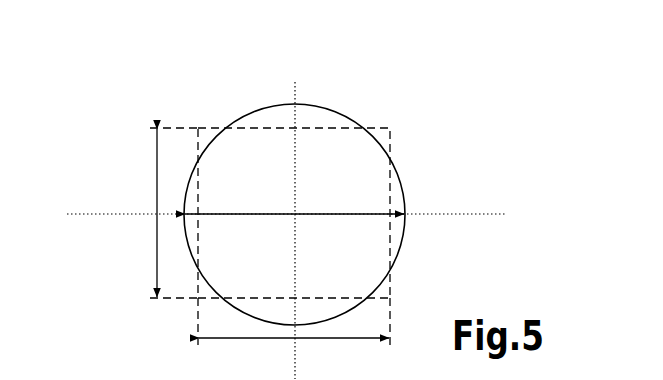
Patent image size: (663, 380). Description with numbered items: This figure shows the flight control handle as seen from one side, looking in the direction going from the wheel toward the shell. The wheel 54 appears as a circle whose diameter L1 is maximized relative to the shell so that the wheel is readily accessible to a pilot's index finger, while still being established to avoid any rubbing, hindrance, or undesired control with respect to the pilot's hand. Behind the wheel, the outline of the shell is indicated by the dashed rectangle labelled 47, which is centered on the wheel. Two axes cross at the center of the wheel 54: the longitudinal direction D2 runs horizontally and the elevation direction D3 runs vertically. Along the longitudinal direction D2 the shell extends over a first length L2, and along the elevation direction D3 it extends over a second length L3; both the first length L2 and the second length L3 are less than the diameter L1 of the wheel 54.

The dashed bounding rectangle 47 is at (392, 137).
The wheel 54 is at (404, 238).
The diameter L1 is at (277, 213).
The first length L2 is at (294, 355).
The second length L3 is at (137, 213).
The longitudinal direction D2 is at (490, 213).
The elevation direction D3 is at (296, 93).